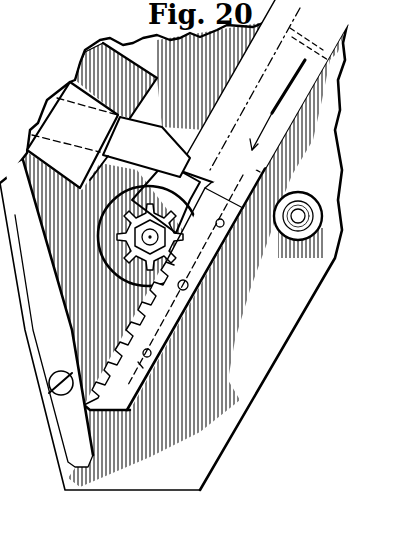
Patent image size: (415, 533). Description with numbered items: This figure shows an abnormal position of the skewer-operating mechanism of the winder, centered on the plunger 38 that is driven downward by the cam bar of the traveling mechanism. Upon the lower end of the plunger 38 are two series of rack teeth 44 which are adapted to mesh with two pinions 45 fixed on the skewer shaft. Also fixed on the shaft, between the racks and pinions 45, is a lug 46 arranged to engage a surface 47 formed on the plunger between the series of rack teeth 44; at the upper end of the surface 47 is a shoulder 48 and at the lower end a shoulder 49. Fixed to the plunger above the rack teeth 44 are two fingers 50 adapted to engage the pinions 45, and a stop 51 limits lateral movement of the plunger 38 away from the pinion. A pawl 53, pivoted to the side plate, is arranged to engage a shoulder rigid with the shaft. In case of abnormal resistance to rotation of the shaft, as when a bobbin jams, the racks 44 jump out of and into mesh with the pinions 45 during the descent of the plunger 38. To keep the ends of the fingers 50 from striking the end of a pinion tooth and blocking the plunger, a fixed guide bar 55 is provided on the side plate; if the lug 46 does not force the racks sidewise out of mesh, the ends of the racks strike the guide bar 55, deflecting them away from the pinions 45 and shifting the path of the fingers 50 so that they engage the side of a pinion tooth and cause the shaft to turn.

The plunger 38 is at (330, 32).
The rack teeth 44 is at (129, 333).
The pinions 45 is at (100, 249).
The lug 46 is at (152, 168).
The surface 47 is at (159, 312).
The shoulder 48 is at (223, 205).
The shoulder 49 is at (150, 349).
The fingers 50 is at (229, 151).
The stop 51 is at (297, 192).
The pawl 53 is at (111, 139).
The guide bar 55 is at (62, 417).